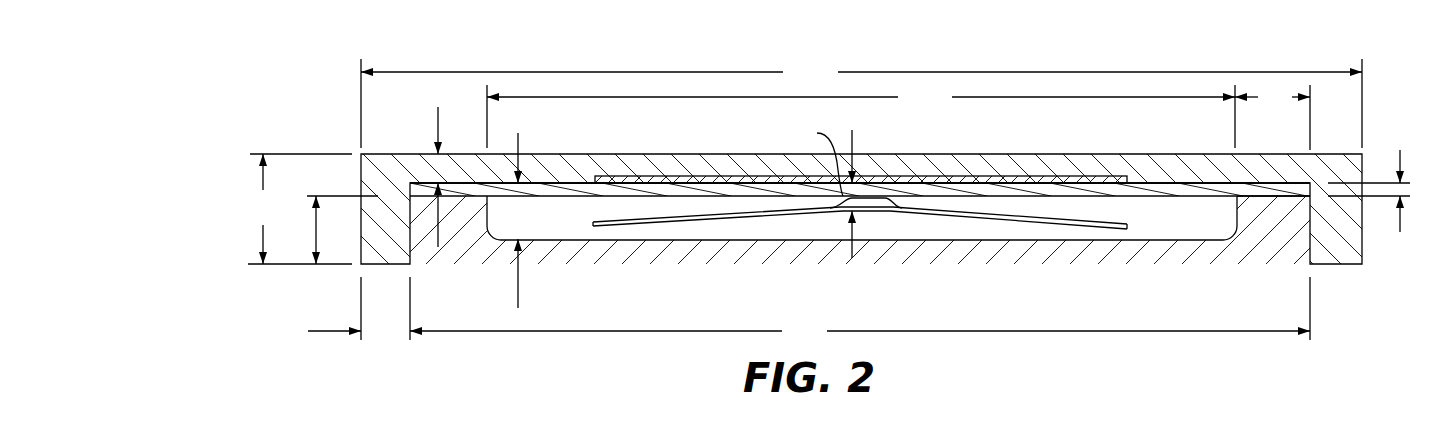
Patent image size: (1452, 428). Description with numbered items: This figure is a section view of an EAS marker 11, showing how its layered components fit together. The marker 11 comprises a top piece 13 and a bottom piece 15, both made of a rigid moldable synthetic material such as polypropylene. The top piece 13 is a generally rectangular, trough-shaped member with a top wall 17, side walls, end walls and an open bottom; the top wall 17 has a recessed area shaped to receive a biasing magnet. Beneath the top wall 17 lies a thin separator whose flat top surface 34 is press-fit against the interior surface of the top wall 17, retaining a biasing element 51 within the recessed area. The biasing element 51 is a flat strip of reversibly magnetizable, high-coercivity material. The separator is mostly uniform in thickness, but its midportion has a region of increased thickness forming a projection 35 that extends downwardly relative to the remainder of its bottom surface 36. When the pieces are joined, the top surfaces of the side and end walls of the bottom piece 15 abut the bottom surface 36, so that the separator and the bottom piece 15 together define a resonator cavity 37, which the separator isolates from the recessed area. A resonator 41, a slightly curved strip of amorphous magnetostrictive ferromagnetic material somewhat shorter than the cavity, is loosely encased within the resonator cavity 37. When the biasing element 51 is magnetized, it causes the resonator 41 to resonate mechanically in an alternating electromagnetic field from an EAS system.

The EAS marker 11 is at (214, 10).
The top piece 13 is at (982, 162).
The bottom piece 15 is at (445, 257).
The top wall 17 is at (498, 157).
The flat top surface 34 is at (558, 187).
The projection 35 is at (872, 199).
The bottom surface 36 is at (1137, 199).
The resonator cavity 37 is at (565, 225).
The resonator 41 is at (680, 224).
The biasing element 51 is at (640, 177).